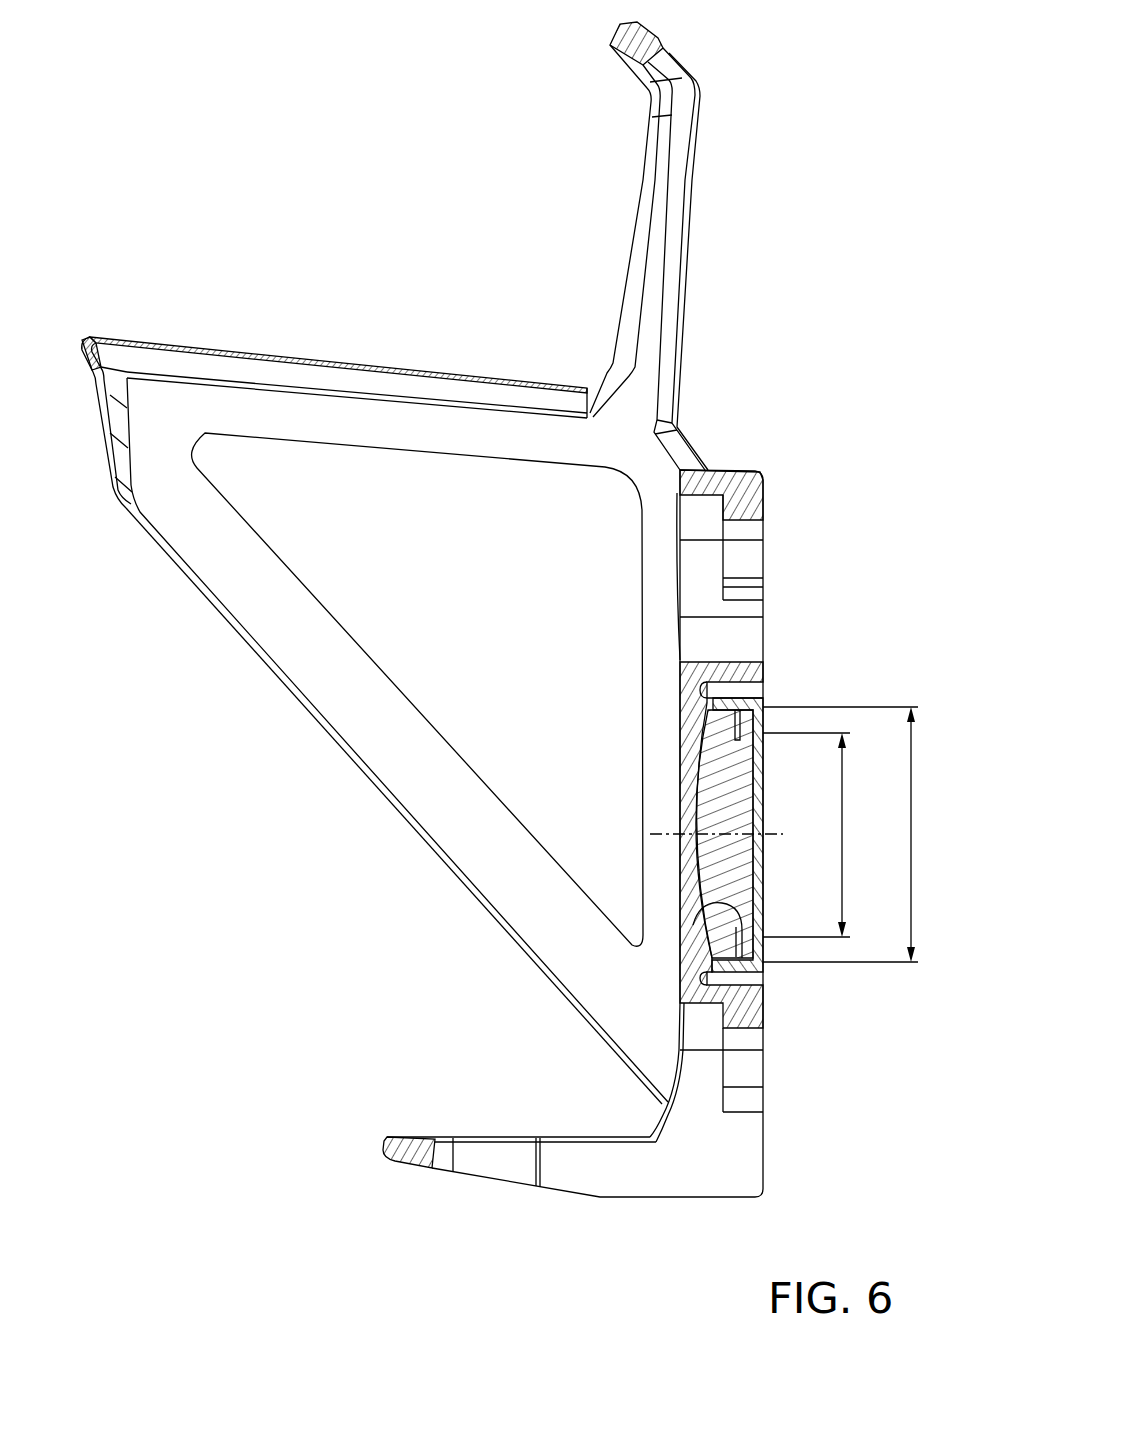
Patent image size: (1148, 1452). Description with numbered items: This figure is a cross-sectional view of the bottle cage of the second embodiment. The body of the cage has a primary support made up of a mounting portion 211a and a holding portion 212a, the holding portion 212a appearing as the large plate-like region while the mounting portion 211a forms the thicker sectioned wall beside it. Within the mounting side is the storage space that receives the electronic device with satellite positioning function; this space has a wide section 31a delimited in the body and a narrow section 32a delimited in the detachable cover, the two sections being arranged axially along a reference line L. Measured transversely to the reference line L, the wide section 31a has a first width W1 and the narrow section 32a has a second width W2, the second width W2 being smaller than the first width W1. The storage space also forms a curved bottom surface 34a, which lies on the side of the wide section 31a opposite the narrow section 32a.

The holding portion 212a is at (388, 455).
The mounting portion 211a is at (690, 690).
The bottom surface 34a is at (737, 700).
The wide section 31a is at (700, 947).
The narrow section 32a is at (700, 917).
The reference line L is at (680, 834).
The first width W1 is at (840, 834).
The second width W2 is at (806, 835).